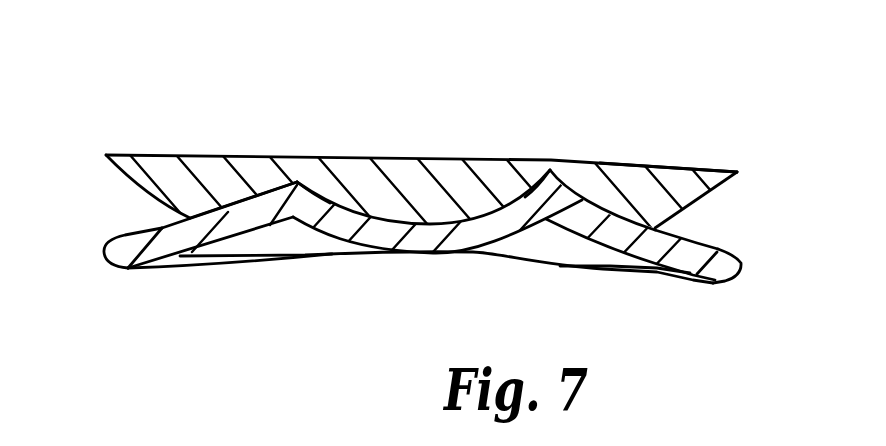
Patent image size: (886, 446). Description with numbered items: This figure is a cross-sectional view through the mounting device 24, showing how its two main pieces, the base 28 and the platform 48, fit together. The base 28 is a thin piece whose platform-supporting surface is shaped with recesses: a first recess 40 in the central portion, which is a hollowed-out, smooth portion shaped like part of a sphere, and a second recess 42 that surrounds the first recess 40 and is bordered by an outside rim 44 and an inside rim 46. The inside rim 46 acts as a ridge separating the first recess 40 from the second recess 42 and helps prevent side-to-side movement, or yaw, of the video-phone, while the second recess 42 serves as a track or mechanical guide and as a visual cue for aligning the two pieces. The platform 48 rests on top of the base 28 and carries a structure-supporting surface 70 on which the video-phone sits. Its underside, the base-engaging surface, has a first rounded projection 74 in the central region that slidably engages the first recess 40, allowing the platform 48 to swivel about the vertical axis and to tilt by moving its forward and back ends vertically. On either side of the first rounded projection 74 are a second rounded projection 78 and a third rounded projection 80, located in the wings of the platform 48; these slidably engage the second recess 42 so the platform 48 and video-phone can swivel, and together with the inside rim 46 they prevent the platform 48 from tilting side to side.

The mounting device 24 is at (135, 94).
The base 28 is at (742, 259).
The first recess 40 is at (500, 207).
The second recess 42 is at (162, 228).
The outside rim 44 is at (103, 241).
The inside rim 46 is at (297, 182).
The platform 48 is at (690, 152).
The structure-supporting surface 70 is at (423, 156).
The first rounded projection 74 is at (390, 207).
The second rounded projection 78 is at (114, 168).
The third rounded projection 80 is at (733, 174).